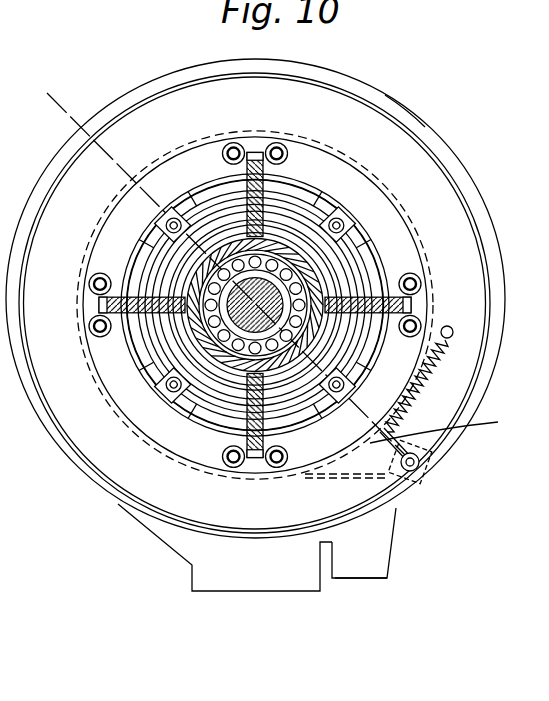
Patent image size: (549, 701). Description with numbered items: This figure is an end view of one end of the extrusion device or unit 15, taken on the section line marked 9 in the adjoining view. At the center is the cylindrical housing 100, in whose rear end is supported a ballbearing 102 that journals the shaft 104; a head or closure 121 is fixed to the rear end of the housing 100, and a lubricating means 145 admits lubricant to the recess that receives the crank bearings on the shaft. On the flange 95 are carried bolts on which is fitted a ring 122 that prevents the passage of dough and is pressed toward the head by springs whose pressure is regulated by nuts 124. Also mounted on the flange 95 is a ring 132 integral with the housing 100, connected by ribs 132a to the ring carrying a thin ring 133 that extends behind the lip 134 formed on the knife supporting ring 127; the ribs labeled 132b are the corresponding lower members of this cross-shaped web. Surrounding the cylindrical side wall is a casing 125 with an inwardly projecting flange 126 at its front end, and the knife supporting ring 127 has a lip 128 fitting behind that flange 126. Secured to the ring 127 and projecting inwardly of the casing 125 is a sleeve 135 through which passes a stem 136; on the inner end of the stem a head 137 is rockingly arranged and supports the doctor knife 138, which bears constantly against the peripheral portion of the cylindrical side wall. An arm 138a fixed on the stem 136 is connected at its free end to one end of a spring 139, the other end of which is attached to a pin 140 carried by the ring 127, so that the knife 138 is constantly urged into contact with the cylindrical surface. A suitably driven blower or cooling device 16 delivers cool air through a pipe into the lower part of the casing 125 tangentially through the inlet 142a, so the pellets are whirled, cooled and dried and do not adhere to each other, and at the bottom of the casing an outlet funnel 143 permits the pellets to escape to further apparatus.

The section line 9- 9 is at (40, 112).
The extrusion device or unit 15 is at (266, 298).
The blower or cooling device 16 is at (378, 549).
The flange 95 is at (310, 195).
The cylindrical housing 100 is at (262, 304).
The ballbearing 102 is at (100, 355).
The shaft 104 is at (305, 252).
The head or closure 121 is at (157, 393).
The ring 122 is at (165, 384).
The nuts 124 is at (172, 397).
The casing 125 is at (432, 132).
The inwardly projecting flange 126 is at (440, 150).
The knife supporting ring 127 is at (430, 175).
The lip 128 is at (405, 107).
The ring 132 is at (231, 297).
The ribs 132a is at (290, 170).
The spider arm 132b is at (270, 468).
The thin ring 133 is at (107, 230).
The lip 134 is at (115, 197).
The sleeve 135 is at (418, 474).
The stem 136 is at (421, 470).
The head 137 is at (425, 452).
The doctor knife 138 is at (347, 480).
The arm 138a is at (456, 428).
The spring 139 is at (410, 410).
The pin 140 is at (448, 326).
The inlet 142a is at (380, 573).
The outlet funnel 143 is at (230, 587).
The lubricating means 145 is at (177, 341).